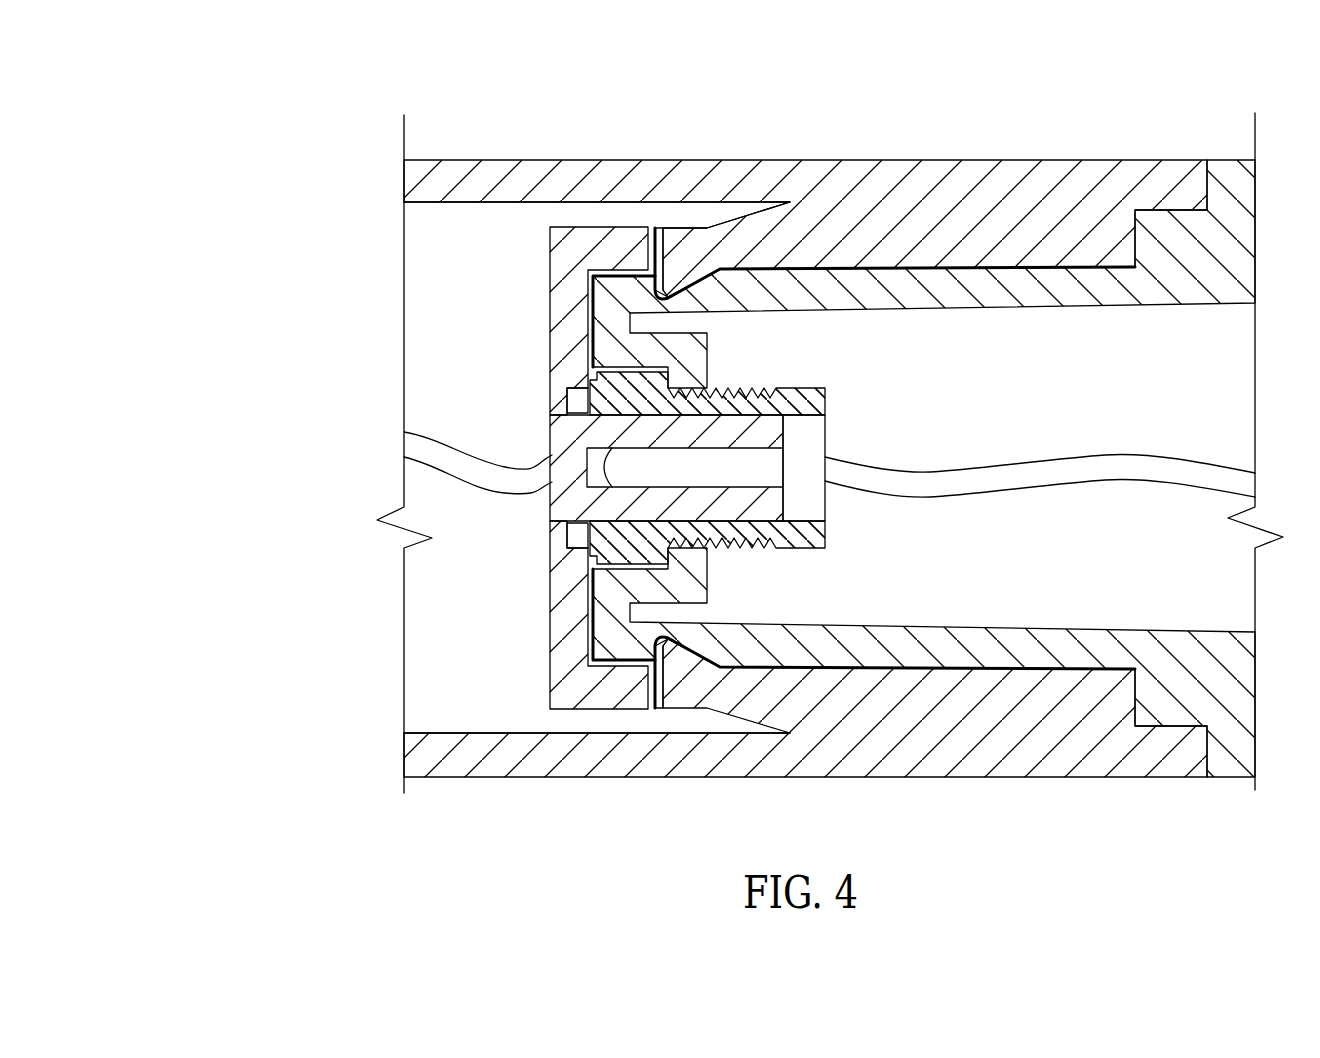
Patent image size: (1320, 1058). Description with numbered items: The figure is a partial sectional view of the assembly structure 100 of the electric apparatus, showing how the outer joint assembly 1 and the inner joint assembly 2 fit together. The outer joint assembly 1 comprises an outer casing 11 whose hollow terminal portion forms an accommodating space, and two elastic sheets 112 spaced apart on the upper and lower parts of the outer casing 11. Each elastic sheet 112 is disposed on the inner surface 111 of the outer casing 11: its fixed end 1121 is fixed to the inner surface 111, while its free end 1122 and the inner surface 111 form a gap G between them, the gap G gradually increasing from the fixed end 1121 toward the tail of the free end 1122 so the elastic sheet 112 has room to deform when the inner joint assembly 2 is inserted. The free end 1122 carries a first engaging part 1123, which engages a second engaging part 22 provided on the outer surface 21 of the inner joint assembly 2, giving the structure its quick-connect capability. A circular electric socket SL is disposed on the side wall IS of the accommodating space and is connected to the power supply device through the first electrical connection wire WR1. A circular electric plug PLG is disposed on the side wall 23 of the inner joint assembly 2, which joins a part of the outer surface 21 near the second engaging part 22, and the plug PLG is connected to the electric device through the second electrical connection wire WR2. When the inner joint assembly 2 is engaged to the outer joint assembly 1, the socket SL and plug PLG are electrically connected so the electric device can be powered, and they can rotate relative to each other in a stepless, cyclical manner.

The assembly structure 100 is at (207, 42).
The outer joint assembly 1 is at (495, 156).
The outer casing 11 is at (620, 160).
The inner surface 111 is at (467, 202).
The elastic sheet 112 is at (207, 168).
The fixed end 1121 is at (972, 110).
The free end 1122 is at (830, 114).
The first engaging part 1123 is at (705, 58).
The inner joint assembly 2 is at (945, 322).
The outer surface 21 is at (873, 667).
The second engaging part 22 is at (688, 297).
The side wall 23 is at (695, 568).
The gap G is at (688, 195).
The circular electric plug PLG is at (753, 470).
The circular electric socket SL is at (592, 505).
The side wall IS is at (568, 618).
The first electrical connection wire WR1 is at (430, 457).
The second electrical connection wire WR2 is at (1090, 467).